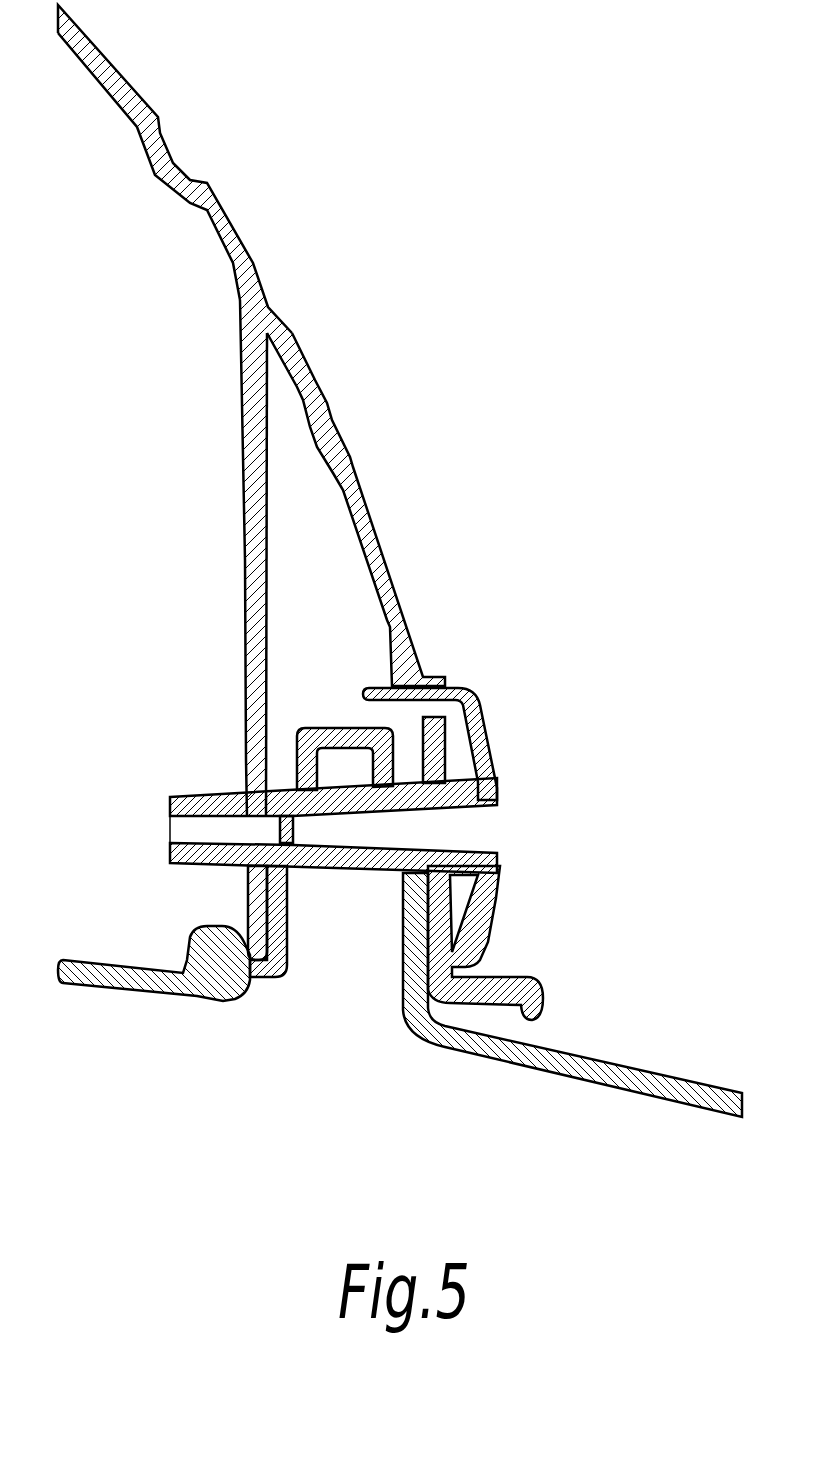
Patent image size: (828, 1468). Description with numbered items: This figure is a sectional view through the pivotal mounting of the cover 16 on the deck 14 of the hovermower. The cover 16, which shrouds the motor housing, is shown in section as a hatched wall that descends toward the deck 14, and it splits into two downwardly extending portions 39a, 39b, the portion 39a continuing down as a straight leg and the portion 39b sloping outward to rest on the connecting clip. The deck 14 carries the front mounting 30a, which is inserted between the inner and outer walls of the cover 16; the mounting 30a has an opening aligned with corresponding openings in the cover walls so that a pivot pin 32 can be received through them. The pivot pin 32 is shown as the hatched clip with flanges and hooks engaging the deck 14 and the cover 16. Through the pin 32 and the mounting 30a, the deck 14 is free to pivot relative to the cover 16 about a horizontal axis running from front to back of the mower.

The deck 14 is at (647, 1087).
The cover 16 is at (222, 226).
The mounting 30a is at (303, 767).
The pivot pin 32 is at (350, 868).
The first leg of trim member 39a is at (257, 563).
The second leg of trim member 39b is at (372, 533).